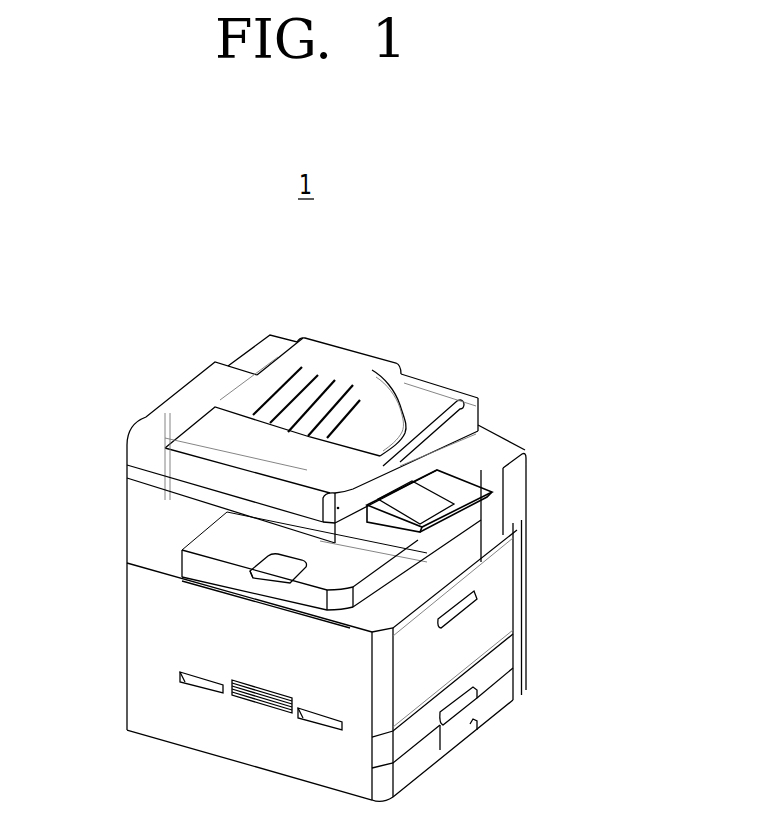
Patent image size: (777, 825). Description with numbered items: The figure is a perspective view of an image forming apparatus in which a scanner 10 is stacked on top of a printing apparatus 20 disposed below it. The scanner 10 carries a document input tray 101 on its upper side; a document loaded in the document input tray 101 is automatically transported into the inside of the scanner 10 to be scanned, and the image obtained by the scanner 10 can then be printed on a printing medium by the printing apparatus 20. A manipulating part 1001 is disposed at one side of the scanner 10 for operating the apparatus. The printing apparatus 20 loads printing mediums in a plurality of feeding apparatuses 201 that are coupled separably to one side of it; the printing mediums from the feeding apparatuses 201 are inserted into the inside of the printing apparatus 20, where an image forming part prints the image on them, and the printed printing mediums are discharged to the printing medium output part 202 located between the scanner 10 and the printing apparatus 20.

The scanner 10 is at (171, 389).
The document input tray 101 is at (375, 368).
The manipulating part 1001 is at (479, 478).
The printing apparatus 20 is at (125, 574).
The feeding apparatuses 201 is at (507, 625).
The printing medium output part 202 is at (372, 550).